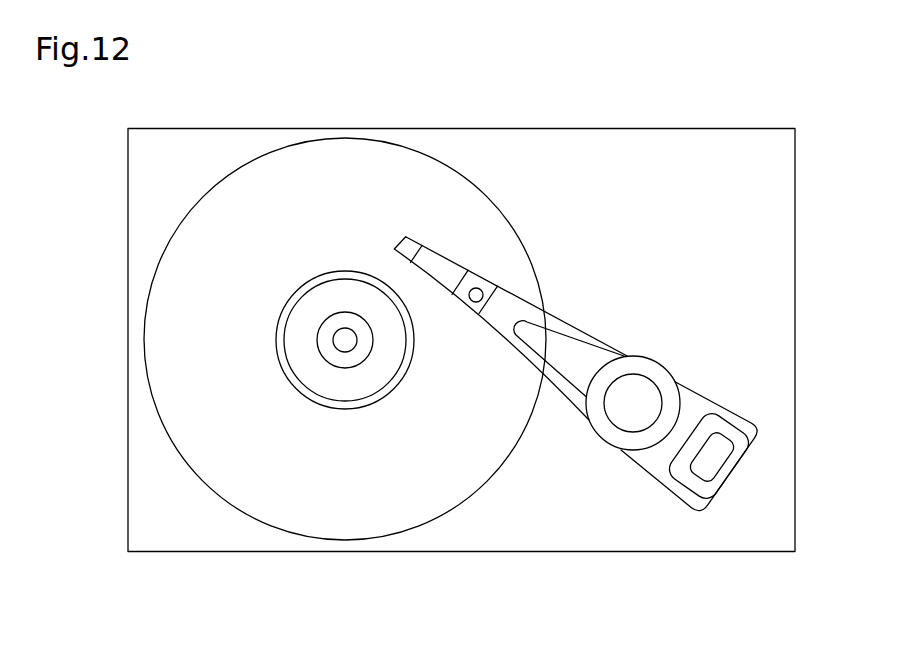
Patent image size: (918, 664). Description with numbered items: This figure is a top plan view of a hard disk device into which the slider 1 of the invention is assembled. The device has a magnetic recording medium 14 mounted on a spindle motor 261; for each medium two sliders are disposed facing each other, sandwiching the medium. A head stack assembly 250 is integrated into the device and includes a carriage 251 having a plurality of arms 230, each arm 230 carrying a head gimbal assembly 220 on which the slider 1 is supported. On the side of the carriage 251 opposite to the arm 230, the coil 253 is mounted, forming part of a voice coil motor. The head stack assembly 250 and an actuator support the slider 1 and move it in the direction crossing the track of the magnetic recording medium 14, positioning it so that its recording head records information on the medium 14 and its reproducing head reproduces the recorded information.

The slider 1 is at (400, 247).
The magnetic recording medium 14 is at (273, 527).
The spindle motor 261 is at (346, 352).
The head gimbal assembly 220 is at (452, 294).
The arm 230 is at (563, 395).
The head stack assembly 250 is at (575, 343).
The carriage 251 is at (643, 357).
The coil 253 is at (738, 475).